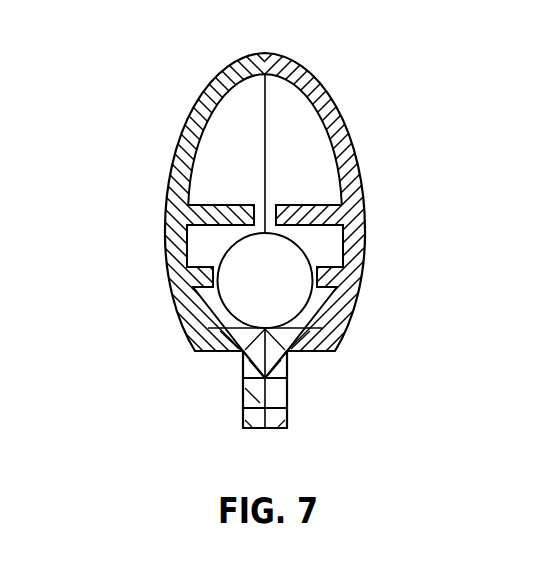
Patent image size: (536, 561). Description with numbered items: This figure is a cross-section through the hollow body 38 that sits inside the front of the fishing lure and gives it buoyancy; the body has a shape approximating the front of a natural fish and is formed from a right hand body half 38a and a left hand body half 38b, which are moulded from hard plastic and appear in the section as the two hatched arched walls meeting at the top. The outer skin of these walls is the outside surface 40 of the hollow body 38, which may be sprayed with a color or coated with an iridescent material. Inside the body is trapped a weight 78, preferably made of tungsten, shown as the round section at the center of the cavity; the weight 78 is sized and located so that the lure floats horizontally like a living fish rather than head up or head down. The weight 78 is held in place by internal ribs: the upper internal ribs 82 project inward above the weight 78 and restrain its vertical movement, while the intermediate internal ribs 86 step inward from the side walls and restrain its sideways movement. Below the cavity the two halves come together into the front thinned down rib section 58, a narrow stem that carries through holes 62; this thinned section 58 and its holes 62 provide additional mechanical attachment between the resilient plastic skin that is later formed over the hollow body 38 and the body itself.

The hollow body 38 is at (151, 54).
The right hand body half 38a is at (192, 115).
The left hand body half 38b is at (340, 137).
The outside surface 40 is at (288, 58).
The upper internal ribs 82 is at (331, 192).
The intermediate internal ribs 86 is at (332, 250).
The weights 78 is at (245, 307).
The front thinned down rib section 58 is at (290, 367).
The through holes 62 is at (272, 392).